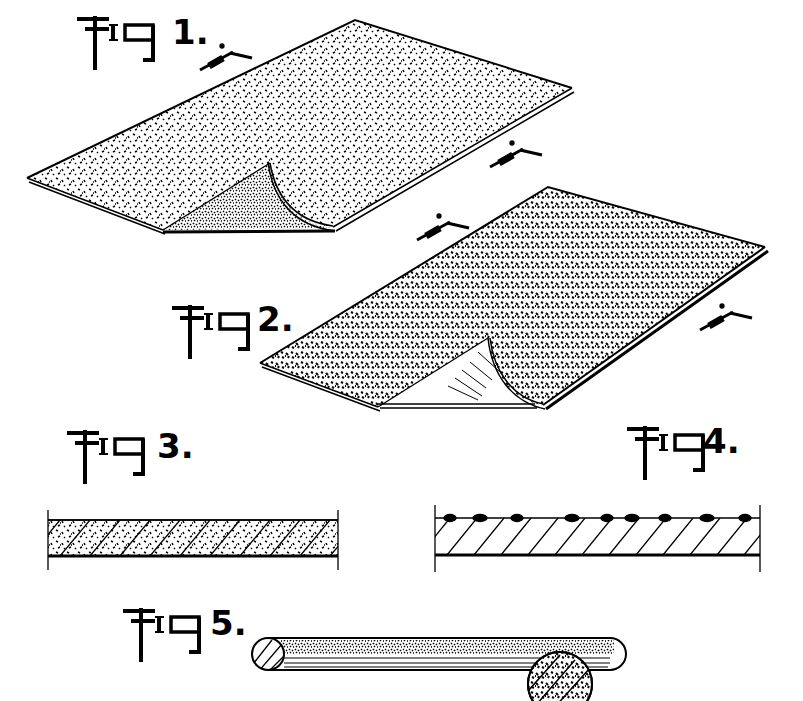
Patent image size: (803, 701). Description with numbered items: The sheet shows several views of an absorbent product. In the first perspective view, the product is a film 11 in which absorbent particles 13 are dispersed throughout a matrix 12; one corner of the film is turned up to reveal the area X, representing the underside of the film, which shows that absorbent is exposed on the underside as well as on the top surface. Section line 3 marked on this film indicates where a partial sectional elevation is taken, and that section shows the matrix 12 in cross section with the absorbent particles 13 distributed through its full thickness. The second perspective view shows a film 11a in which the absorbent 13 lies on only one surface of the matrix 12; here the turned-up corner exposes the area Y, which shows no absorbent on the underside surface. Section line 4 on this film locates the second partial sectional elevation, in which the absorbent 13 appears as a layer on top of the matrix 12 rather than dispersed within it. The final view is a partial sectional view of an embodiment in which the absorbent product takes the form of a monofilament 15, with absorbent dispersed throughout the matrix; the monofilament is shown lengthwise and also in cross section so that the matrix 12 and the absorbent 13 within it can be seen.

In FIG. 1, the film 11 is at (300, 153).
In FIG. 2, the film 11a is at (514, 304).
In FIG. 1, the matrix 12 is at (108, 198).
In FIG. 3, the matrix 12 is at (197, 530).
In FIG. 4, the matrix 12 is at (589, 538).
In FIG. 5, the matrix 12 is at (267, 648).
In FIG. 1, the absorbent particles 13 is at (140, 190).
In FIG. 2, the absorbent particles 13 is at (345, 406).
In FIG. 3, the absorbent particles 13 is at (258, 528).
In FIG. 4, the absorbent particles 13 is at (574, 518).
In FIG. 5, the absorbent particles 13 is at (458, 640).
In FIG. 5, the monofilament 15 is at (449, 646).
In FIG. 1, the section line 3— 3 is at (379, 92).
In FIG. 2, the section line 4— 4 is at (588, 256).
In FIG. 1, the area X is at (225, 218).
In FIG. 2, the area Y is at (452, 390).